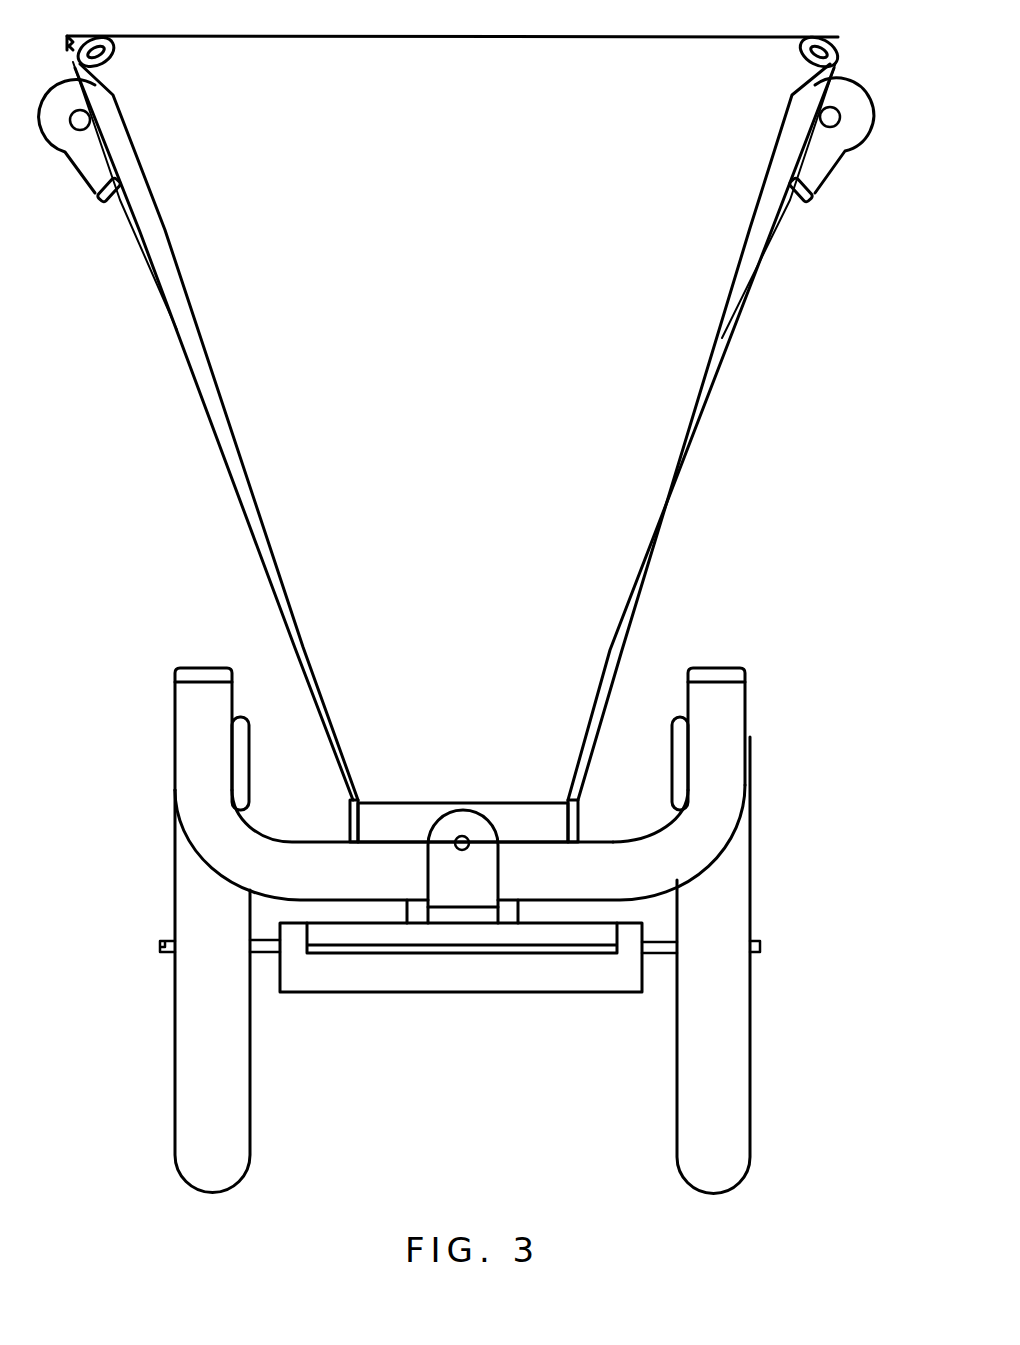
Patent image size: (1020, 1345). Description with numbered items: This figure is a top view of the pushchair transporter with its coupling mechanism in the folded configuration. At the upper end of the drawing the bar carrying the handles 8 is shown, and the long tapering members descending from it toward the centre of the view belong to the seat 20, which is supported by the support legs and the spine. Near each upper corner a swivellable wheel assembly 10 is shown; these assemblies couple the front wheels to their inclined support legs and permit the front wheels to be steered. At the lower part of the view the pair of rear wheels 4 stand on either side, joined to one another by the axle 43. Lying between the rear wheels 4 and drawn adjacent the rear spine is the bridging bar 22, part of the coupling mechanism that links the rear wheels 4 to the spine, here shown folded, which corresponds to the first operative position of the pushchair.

The rear wheels 4 is at (738, 1015).
The handles 8 is at (723, 699).
The swivellable wheel assembly 10 is at (848, 128).
The seat 20 is at (668, 362).
The bridging bar 22 is at (557, 975).
The axle 43 is at (260, 953).